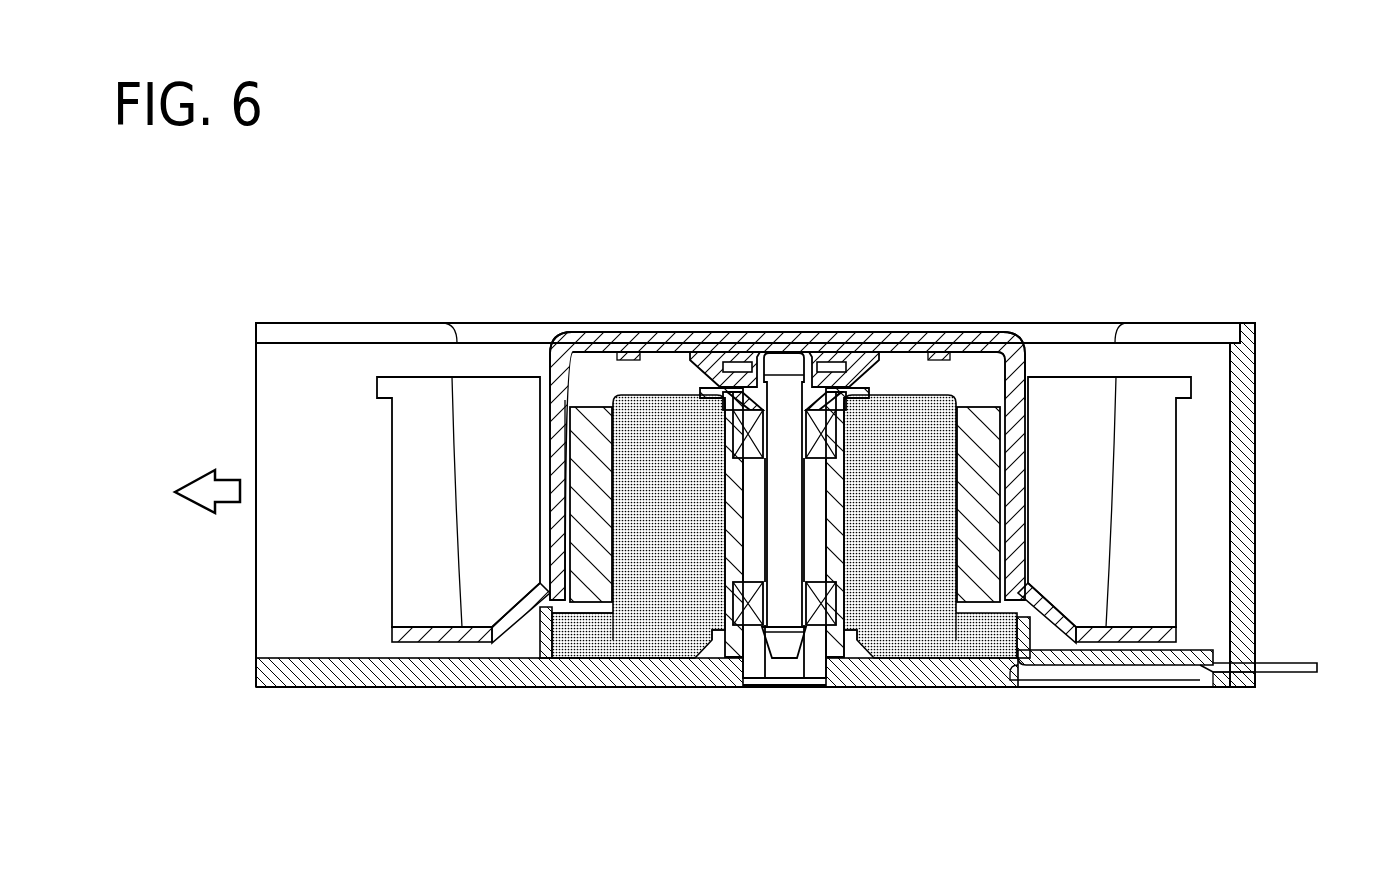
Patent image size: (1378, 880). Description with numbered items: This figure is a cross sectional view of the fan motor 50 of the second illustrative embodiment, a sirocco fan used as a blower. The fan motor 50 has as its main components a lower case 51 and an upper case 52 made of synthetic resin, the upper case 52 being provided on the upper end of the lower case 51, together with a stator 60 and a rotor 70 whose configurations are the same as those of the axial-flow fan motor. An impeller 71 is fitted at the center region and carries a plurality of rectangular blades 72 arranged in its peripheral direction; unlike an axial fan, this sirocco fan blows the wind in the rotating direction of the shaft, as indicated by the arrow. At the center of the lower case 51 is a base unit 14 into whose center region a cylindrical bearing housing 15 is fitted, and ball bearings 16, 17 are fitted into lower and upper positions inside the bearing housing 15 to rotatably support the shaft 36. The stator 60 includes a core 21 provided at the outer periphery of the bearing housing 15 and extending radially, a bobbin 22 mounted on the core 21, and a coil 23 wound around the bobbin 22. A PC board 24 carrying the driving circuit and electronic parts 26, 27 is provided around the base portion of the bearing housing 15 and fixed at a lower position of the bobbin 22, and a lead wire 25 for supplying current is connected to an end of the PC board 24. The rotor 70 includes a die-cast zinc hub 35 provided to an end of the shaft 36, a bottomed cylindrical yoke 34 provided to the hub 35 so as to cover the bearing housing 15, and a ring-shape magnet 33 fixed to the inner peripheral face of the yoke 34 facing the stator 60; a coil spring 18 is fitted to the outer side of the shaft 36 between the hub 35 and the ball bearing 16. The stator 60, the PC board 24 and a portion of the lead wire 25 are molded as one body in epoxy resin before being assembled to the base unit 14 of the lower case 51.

The base unit 14 is at (398, 688).
The bearing housing 15 is at (740, 688).
The ball bearing 16 is at (820, 416).
The ball bearing 17 is at (752, 625).
The coil spring 18 is at (753, 393).
The core 21 is at (933, 395).
The bobbin 22 is at (632, 395).
The coil 23 is at (643, 688).
The PC board 24 is at (1000, 688).
The lead wire 25 is at (1078, 682).
The electronic part 26 is at (676, 688).
The electronic part 27 is at (580, 688).
The ring-shape magnet 33 is at (588, 405).
The yoke 34 is at (553, 383).
The hub 35 is at (837, 380).
The shaft 36 is at (792, 650).
The fan motor 50 is at (1198, 204).
The lower case 51 is at (1270, 352).
The upper case 52 is at (1182, 333).
The stator 60 is at (952, 383).
The rotor 70 is at (575, 316).
The impeller 71 is at (1006, 357).
The blade 72 is at (1148, 410).